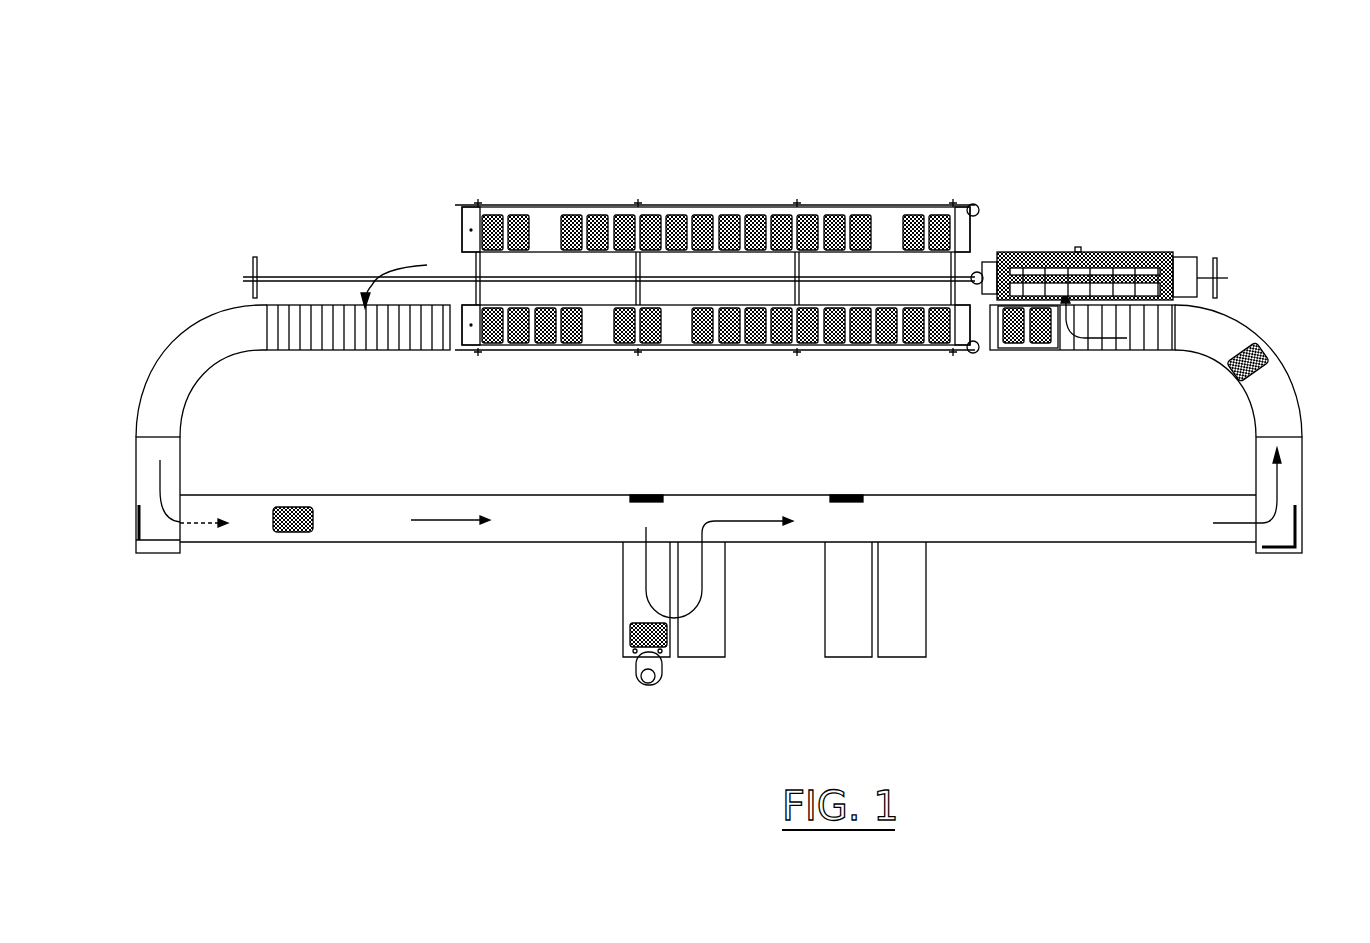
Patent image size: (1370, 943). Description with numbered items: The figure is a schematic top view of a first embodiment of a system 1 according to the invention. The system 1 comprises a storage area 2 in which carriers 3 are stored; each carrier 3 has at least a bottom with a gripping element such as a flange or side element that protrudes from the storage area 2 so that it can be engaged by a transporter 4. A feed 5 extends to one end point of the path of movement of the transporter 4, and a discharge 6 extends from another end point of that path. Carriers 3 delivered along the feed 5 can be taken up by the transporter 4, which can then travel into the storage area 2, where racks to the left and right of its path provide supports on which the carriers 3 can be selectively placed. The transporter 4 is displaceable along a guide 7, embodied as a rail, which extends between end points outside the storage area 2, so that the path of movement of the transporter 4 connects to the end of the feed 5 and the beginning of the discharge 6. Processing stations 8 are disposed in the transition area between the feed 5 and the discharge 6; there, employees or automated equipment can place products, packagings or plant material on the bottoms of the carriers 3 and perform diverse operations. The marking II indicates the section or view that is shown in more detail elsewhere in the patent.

The system 1 is at (1198, 108).
The storage area 2 is at (683, 185).
The carrier 3 is at (495, 338).
The transporter 4 is at (1056, 225).
The feed 5 is at (1283, 400).
The discharge 6 is at (197, 345).
The guide 7 is at (295, 275).
The processing stations 8 is at (632, 603).
The section line II is at (968, 378).